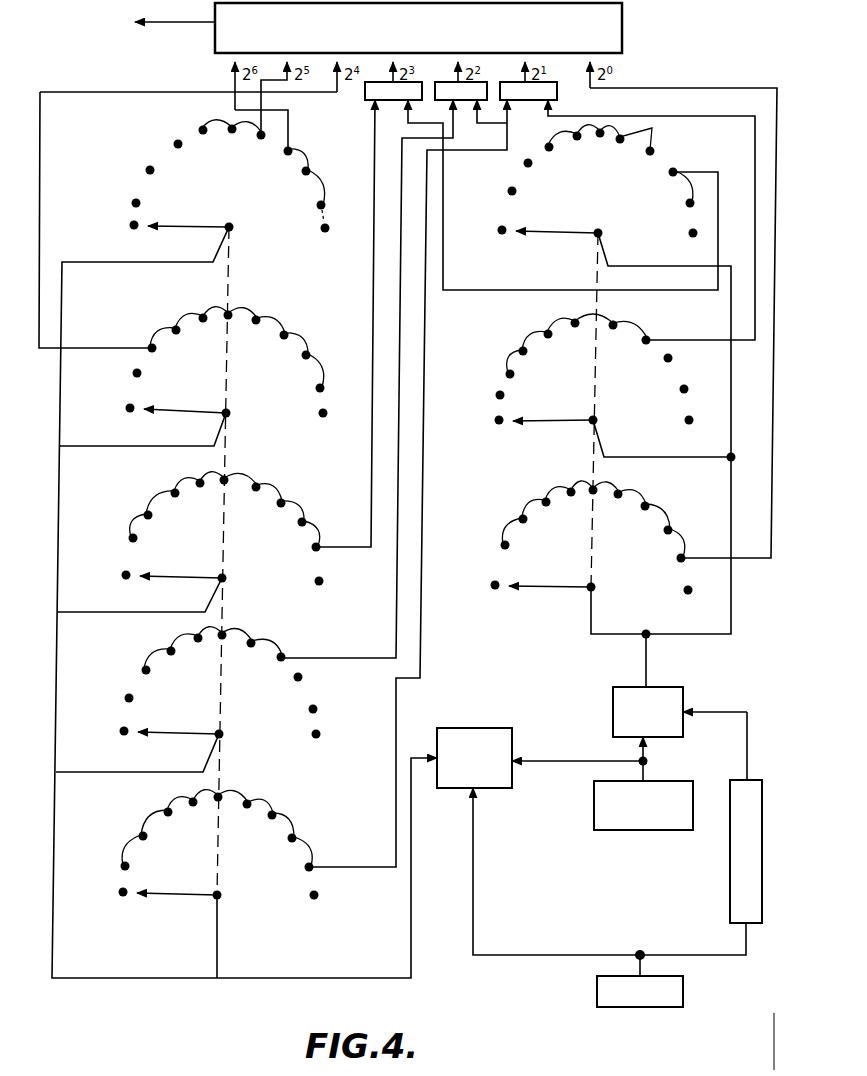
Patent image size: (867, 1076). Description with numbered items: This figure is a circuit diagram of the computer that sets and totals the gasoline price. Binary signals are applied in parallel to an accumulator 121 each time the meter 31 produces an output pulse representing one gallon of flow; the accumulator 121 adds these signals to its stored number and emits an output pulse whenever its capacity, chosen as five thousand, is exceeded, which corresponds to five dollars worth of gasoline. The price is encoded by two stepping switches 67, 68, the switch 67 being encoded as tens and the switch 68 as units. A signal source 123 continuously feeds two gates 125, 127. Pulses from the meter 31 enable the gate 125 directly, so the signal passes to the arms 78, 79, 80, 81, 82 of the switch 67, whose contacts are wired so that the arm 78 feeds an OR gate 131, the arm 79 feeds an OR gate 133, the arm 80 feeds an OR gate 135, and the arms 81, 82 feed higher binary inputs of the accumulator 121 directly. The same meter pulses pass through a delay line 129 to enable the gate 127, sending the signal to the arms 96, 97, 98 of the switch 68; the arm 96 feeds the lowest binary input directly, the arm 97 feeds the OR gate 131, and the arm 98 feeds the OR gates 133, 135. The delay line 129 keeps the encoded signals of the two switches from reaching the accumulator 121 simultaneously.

The accumulator 121 is at (622, 40).
The OR gate 135 is at (365, 98).
The OR gate 133 is at (435, 96).
The OR gate 131 is at (557, 94).
The arm 82 is at (223, 222).
The arm 81 is at (221, 409).
The arm 80 is at (216, 574).
The arm 79 is at (213, 730).
The arm 78 is at (211, 891).
The stepping switch 67 is at (232, 440).
The stepping switch 68 is at (602, 304).
The arm 98 is at (592, 229).
The arm 97 is at (587, 416).
The arm 96 is at (585, 583).
The gate 125 is at (490, 731).
The gate 127 is at (628, 690).
The signal source 123 is at (687, 781).
The delay line 129 is at (730, 865).
The meter 31 is at (683, 982).